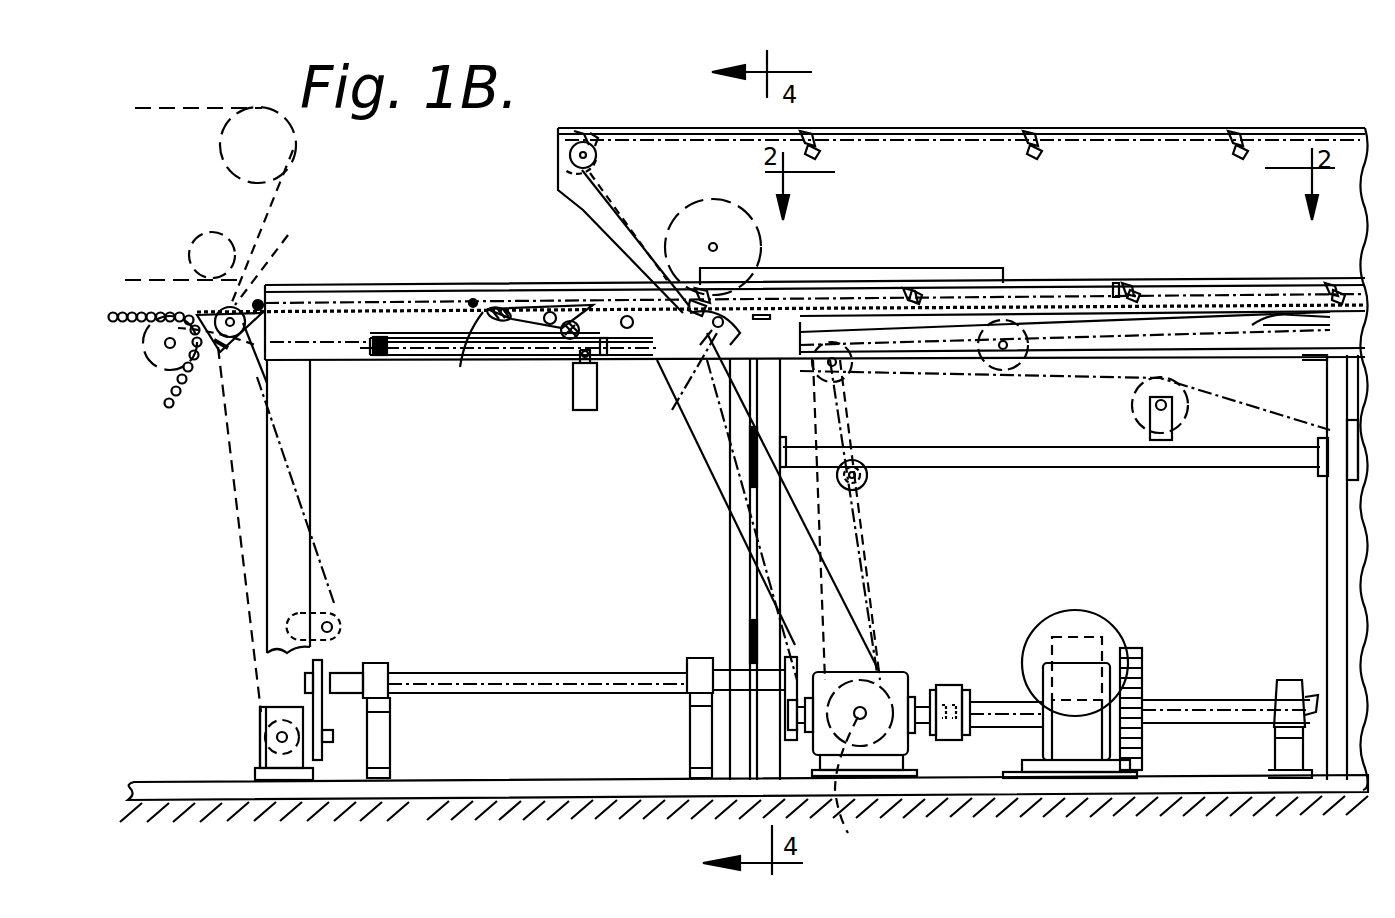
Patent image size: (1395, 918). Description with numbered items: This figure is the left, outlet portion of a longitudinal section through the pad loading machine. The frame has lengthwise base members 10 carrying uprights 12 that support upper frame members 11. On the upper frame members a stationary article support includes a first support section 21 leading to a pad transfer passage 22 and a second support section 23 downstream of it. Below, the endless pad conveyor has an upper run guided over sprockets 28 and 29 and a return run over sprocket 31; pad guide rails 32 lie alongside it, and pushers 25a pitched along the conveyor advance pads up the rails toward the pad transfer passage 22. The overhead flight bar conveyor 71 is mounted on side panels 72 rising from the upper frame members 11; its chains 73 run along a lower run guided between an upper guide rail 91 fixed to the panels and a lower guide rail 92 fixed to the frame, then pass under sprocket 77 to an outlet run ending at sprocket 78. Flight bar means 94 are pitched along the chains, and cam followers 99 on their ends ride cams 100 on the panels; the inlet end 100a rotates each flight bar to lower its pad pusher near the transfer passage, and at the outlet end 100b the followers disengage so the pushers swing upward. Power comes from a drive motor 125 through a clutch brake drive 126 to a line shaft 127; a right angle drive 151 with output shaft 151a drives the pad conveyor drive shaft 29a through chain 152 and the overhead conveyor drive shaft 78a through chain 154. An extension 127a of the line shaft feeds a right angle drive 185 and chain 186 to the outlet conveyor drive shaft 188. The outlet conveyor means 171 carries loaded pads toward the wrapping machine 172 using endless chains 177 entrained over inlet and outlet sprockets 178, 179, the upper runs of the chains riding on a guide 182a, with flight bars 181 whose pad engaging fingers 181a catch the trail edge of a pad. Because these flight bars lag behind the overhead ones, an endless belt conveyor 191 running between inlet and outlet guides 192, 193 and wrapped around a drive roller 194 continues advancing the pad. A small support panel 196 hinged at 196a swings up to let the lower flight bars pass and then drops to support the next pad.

The base members 10 is at (1013, 795).
The upper frame members 11 is at (325, 370).
The uprights 12 is at (312, 488).
The first support section 21 is at (1195, 295).
The pad transfer passage 22 is at (995, 310).
The second support section 23 is at (858, 298).
The pushers 25a is at (1300, 323).
The sprocket 28 is at (1010, 375).
The sprocket 29 is at (860, 385).
The pad conveyor drive shaft 29a is at (845, 410).
The sprocket 31 is at (1195, 405).
The pad guide rails 32 is at (1310, 318).
The overhead flight bar conveyor 71 is at (1210, 118).
The side panels 72 is at (935, 140).
The chains 73 is at (1152, 135).
The sprocket 77 is at (755, 250).
The sprocket 78 is at (600, 173).
The overhead conveyor drive shaft 78a is at (590, 135).
The upper guide rail 91 is at (1250, 300).
The lower guide rail 92 is at (1270, 300).
The flight bar means 94 is at (1118, 280).
The cam followers 99 is at (1032, 142).
The cams 100 is at (810, 268).
The inlet end of cam 100a is at (985, 285).
The outlet end of cam 100b is at (697, 268).
The drive motor 125 is at (1098, 618).
The clutch brake drive 126 is at (1068, 740).
The line shaft 127 is at (1188, 690).
The extension of line shaft 127a is at (543, 673).
The right angle drive 151 is at (895, 745).
The output shaft 151a is at (872, 785).
The chain 152 is at (858, 558).
The chain 154 is at (703, 457).
The outlet conveyor means 171 is at (487, 268).
The wrapping machine 172 is at (270, 205).
The endless chains 177 is at (345, 290).
The inlet sprocket 178 is at (672, 379).
The outlet sprocket 179 is at (229, 266).
The flight bars 181 is at (470, 298).
The pad engaging fingers 181a is at (270, 310).
The table rail 182a is at (522, 290).
The right angle drive 185 is at (262, 757).
The chain 186 is at (237, 510).
The outlet conveyor drive shaft 188 is at (235, 325).
The endless belt conveyor 191 is at (523, 327).
The inlet guide 192 is at (688, 338).
The outlet guide 193 is at (460, 367).
The drive roller 194 is at (557, 337).
The small support panel 196 is at (722, 330).
The hinge 196a is at (770, 318).